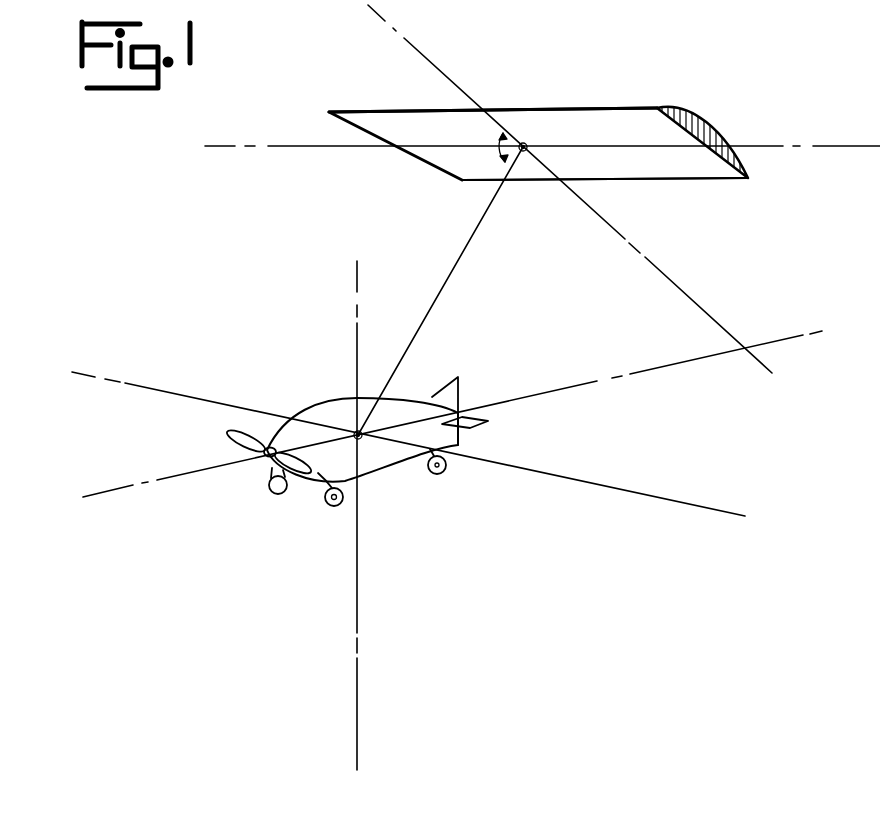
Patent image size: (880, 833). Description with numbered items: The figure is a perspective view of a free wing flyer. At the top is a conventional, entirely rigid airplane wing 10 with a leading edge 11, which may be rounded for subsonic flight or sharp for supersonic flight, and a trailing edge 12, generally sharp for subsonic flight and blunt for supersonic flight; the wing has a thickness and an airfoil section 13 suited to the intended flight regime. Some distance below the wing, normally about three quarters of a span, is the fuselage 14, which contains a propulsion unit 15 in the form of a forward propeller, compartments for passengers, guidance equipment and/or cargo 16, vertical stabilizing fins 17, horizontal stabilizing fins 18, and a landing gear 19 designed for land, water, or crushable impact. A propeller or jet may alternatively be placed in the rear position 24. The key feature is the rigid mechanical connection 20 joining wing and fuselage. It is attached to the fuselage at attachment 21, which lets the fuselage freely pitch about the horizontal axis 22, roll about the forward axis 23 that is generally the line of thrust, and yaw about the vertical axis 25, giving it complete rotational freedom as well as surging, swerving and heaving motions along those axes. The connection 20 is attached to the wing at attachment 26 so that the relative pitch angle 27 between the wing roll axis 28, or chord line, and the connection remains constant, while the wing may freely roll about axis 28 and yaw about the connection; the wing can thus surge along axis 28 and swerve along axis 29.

The airplane wing 10 is at (447, 164).
The leading edge 11 is at (599, 101).
The trailing edge 12 is at (720, 182).
The airfoil section 13 is at (703, 122).
The fuselage 14 is at (379, 451).
The propulsion unit 15 is at (277, 462).
The compartments for passengers and/or guidance equipment and/or cargo 16 is at (387, 469).
The vertical stabilizing fins 17 is at (462, 380).
The horizontal stabilizing fins 18 is at (490, 424).
The landing gear 19 is at (333, 508).
The mechanical connection 20 is at (445, 283).
The attachment to fuselage 21 is at (364, 429).
The horizontal axis 22 is at (160, 389).
The forward axis 23 is at (100, 489).
The rear position 24 is at (487, 410).
The vertical axis 25 is at (357, 280).
The attachment to wing 26 is at (526, 143).
The relative pitch angle 27 is at (505, 159).
The wing roll axis 28 is at (422, 53).
The wing swerve axis 29 is at (222, 145).